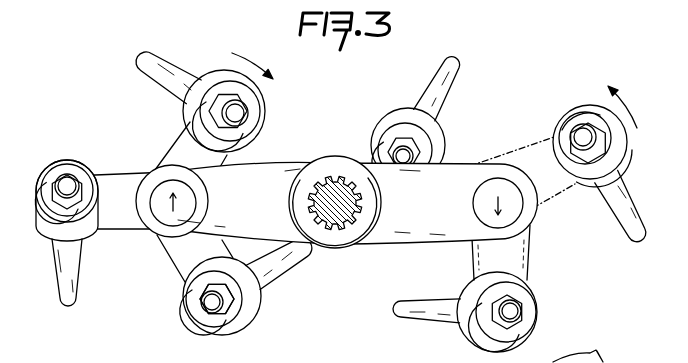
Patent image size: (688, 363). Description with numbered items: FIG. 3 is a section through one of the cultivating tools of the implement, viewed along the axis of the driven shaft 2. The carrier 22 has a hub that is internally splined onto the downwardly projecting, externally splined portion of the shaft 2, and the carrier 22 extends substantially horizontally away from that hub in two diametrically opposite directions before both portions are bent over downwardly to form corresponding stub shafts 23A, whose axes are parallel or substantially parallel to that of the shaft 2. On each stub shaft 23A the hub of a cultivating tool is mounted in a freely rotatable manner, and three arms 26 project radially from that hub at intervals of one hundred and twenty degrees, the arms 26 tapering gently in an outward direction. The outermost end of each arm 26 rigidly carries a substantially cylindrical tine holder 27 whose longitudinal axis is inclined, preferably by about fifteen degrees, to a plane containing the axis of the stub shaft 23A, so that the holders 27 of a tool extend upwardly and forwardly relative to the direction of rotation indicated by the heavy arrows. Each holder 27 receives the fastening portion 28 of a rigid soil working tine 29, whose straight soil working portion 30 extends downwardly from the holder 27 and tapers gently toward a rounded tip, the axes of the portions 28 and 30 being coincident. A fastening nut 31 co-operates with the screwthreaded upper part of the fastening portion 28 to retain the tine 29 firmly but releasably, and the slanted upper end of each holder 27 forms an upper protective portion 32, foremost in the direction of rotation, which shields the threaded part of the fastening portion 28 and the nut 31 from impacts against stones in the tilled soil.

The shaft 2 is at (339, 229).
The carrier 22 is at (293, 165).
The stub shaft 23A is at (174, 258).
The arm 26 is at (170, 154).
The tine holder 27 is at (384, 129).
The fastening portion 28 is at (580, 130).
The soil working tine 29 is at (52, 283).
The soil working portion 30 is at (166, 68).
The fastening nut 31 is at (222, 322).
The upper protective portion 32 is at (70, 161).